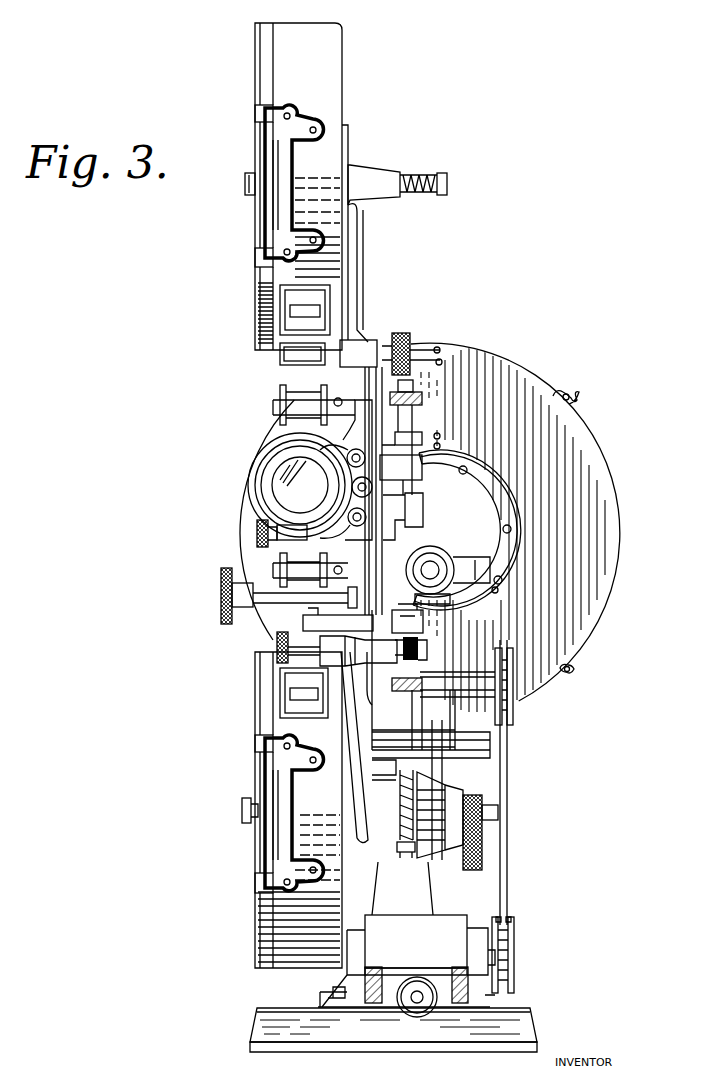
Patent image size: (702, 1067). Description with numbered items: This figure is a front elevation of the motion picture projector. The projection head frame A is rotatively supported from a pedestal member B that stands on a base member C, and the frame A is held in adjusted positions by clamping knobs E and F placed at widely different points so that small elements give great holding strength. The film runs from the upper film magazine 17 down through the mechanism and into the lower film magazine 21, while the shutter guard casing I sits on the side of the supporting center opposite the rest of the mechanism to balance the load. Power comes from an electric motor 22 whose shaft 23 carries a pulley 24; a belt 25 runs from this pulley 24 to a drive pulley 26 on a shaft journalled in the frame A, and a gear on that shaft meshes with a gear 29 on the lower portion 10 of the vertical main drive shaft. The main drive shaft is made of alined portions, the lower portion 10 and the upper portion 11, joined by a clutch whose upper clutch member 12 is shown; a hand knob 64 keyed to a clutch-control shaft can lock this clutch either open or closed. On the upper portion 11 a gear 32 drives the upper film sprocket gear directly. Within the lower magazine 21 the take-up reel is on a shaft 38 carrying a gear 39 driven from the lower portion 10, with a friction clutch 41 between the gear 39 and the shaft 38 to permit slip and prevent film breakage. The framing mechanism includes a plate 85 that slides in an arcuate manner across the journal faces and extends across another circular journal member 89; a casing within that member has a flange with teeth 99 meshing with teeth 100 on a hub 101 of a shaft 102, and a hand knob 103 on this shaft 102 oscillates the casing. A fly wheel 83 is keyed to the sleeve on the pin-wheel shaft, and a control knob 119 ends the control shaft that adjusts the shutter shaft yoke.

The upper film magazine 17 is at (330, 105).
The projection head frame A is at (366, 340).
The pedestal member B is at (400, 335).
The clamping knob E is at (420, 344).
The shutter guard casing I is at (507, 370).
The gear 32 is at (425, 398).
The upper portion of main drive shaft 11 is at (418, 447).
The hub 101 is at (310, 486).
The hand knob 103 is at (221, 600).
The shaft 102 is at (322, 618).
The hand knob 64 is at (277, 648).
The plate 85 is at (470, 467).
The circular journal member 89 is at (430, 512).
The teeth 99 is at (415, 556).
The fly wheel 83 is at (510, 532).
The control knob 119 is at (500, 578).
The teeth 100 is at (423, 620).
The clutch member 12 is at (430, 632).
The gear 29 is at (425, 678).
The drive pulley 26 is at (520, 695).
The lower film magazine 21 is at (340, 808).
The lower portion of main drive shaft 10 is at (400, 778).
The friction clutch 41 is at (440, 795).
The shaft 38 is at (490, 803).
The clamping knob F is at (510, 853).
The gear 39 is at (405, 856).
The belt 25 is at (510, 883).
The motor shaft 23 is at (476, 928).
The electric motor 22 is at (406, 939).
The pulley 24 is at (518, 940).
The base member C is at (530, 1010).